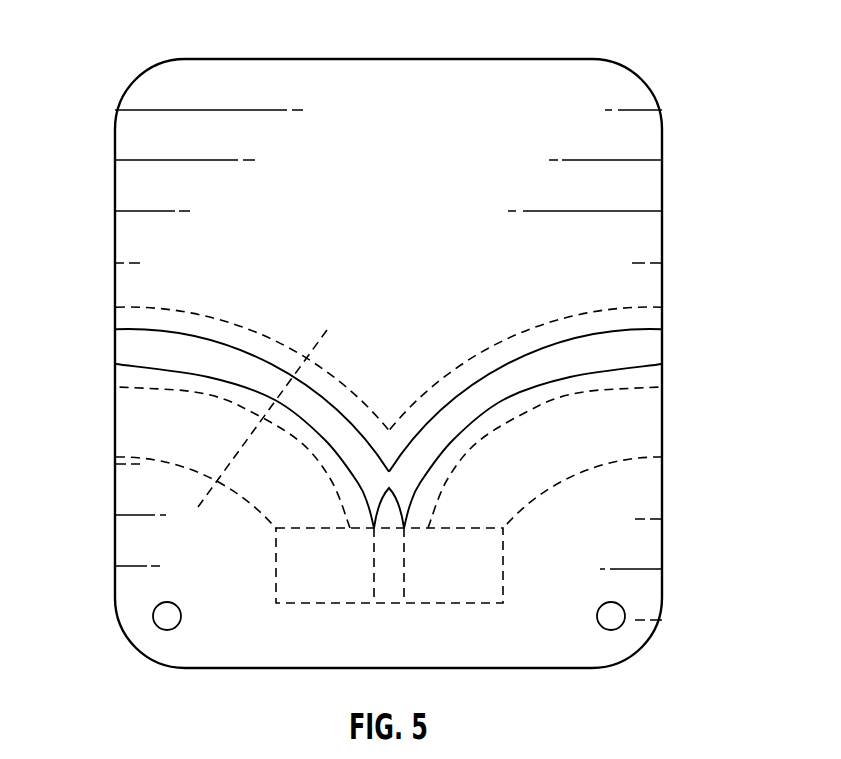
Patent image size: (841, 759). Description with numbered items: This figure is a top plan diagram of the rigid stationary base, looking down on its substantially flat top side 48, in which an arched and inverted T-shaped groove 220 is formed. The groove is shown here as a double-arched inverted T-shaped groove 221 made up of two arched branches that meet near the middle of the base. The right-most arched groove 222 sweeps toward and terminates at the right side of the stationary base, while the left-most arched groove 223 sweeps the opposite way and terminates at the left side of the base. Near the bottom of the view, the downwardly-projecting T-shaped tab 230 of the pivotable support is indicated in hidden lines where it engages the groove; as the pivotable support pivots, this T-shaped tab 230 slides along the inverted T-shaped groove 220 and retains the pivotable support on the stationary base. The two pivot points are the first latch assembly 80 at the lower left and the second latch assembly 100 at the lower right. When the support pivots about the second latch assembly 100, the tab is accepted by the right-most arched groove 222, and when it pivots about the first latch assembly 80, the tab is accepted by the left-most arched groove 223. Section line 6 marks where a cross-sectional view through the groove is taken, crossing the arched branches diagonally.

The flat top side 48 is at (242, 93).
The arched and inverted T-shaped groove 220 is at (389, 362).
The double-arched inverted T-shaped groove 221 is at (389, 390).
The right-most arched groove 222 is at (575, 338).
The left-most arched groove 223 is at (207, 340).
The section line 6- 6 is at (327, 330).
The T-shaped tab 230 is at (503, 569).
The first latch assembly 80 is at (153, 616).
The second latch assembly 100 is at (625, 616).